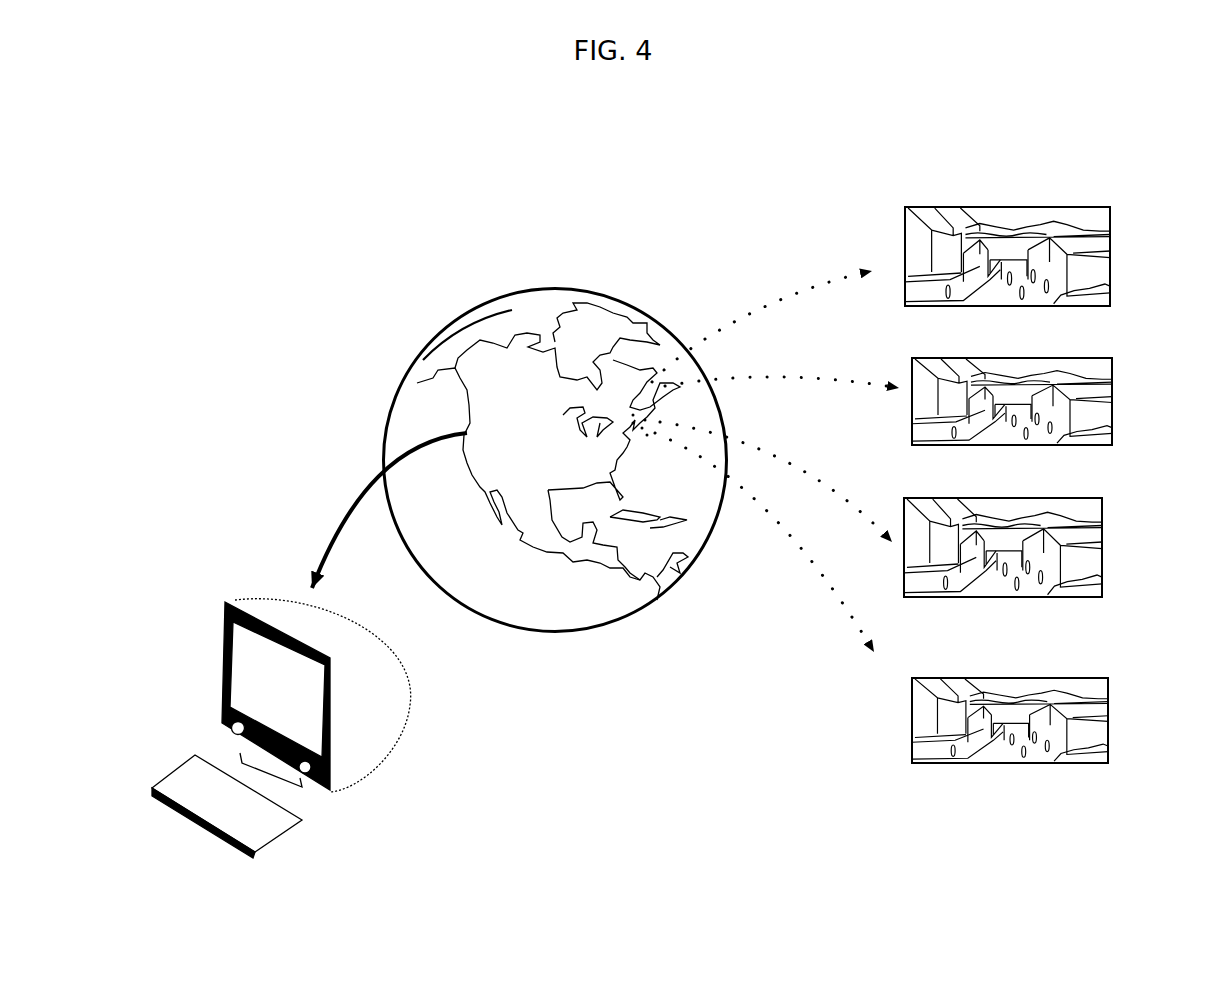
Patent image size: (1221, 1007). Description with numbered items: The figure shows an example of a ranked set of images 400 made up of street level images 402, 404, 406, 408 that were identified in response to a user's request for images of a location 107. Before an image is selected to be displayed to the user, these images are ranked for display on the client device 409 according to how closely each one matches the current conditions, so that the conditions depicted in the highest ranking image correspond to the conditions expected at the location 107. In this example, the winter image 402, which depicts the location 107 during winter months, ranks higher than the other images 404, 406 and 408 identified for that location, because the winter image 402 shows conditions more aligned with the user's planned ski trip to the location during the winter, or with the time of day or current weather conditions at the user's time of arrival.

The ranked set of images 400 is at (1180, 44).
The location 107 is at (632, 425).
The winter image 402 is at (905, 208).
The street level image 404 is at (912, 358).
The street level image 406 is at (915, 498).
The street level image 408 is at (938, 677).
The client device 409 is at (222, 660).